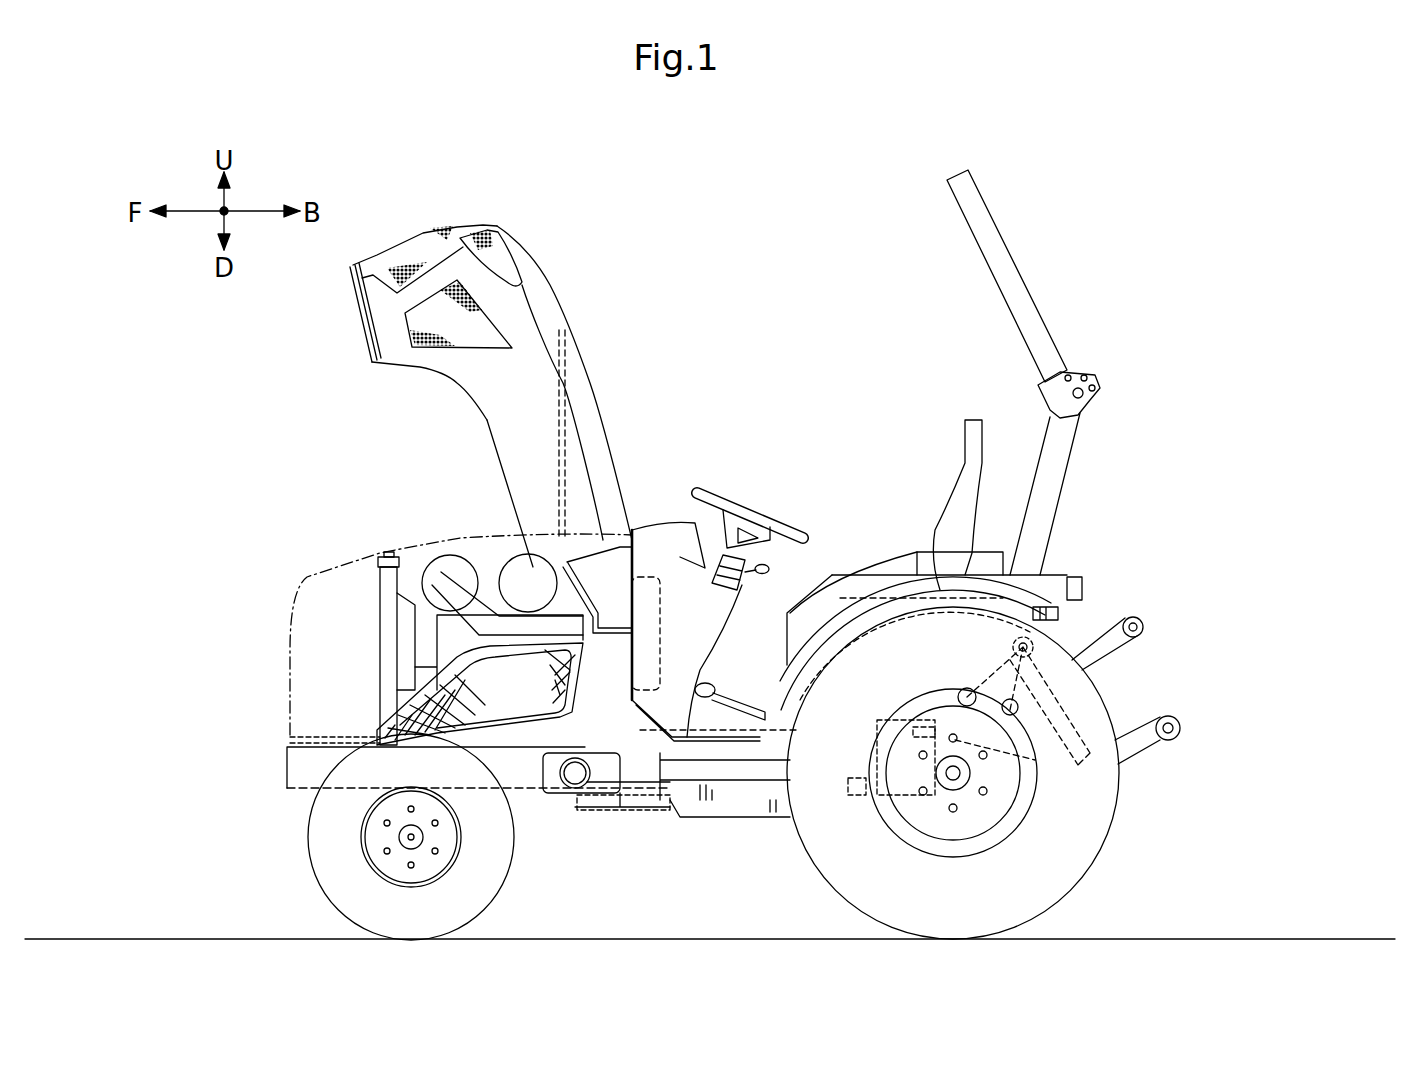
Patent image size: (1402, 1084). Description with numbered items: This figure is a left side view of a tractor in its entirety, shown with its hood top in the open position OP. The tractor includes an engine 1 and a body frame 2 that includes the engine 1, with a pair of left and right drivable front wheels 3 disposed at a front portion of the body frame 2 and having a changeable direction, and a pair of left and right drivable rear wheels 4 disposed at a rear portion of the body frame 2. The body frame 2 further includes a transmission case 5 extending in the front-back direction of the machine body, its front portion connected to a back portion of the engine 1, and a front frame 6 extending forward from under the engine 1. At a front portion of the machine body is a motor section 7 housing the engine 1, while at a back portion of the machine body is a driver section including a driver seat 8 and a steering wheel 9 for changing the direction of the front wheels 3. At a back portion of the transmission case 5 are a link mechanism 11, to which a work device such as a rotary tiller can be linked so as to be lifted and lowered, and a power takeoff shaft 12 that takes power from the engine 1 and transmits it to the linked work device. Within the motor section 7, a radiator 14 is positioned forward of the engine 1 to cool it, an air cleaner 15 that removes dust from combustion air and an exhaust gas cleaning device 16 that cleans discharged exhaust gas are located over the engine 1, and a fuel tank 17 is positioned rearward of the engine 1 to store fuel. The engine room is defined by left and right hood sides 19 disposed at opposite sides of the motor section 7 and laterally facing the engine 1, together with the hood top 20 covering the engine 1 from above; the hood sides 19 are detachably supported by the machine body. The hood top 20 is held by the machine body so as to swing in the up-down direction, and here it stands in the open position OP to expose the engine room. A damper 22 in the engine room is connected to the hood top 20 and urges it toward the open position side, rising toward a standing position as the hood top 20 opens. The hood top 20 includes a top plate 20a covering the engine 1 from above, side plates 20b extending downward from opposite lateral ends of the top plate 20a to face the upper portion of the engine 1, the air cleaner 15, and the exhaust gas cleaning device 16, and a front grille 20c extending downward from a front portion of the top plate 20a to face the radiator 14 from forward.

The engine 1 is at (447, 627).
The body frame 2 is at (657, 825).
The front wheels 3 is at (315, 845).
The rear wheels 4 is at (1088, 860).
The transmission case 5 is at (836, 830).
The front frame 6 is at (530, 775).
The motor section 7 is at (290, 572).
The driver seat 8 is at (965, 418).
The steering wheel 9 is at (757, 522).
The link mechanism 11 is at (1157, 748).
The power takeoff shaft 12 is at (1035, 763).
The radiator 14 is at (387, 603).
The air cleaner 15 is at (450, 558).
The exhaust gas cleaning device 16 is at (515, 560).
The fuel tank 17 is at (620, 600).
The hood sides 19 is at (493, 707).
The hood top 20 is at (517, 362).
The top plate 20a is at (587, 373).
The side plates 20b is at (487, 420).
The front grille 20c is at (410, 247).
The damper 22 is at (585, 465).
The open position OP is at (537, 196).